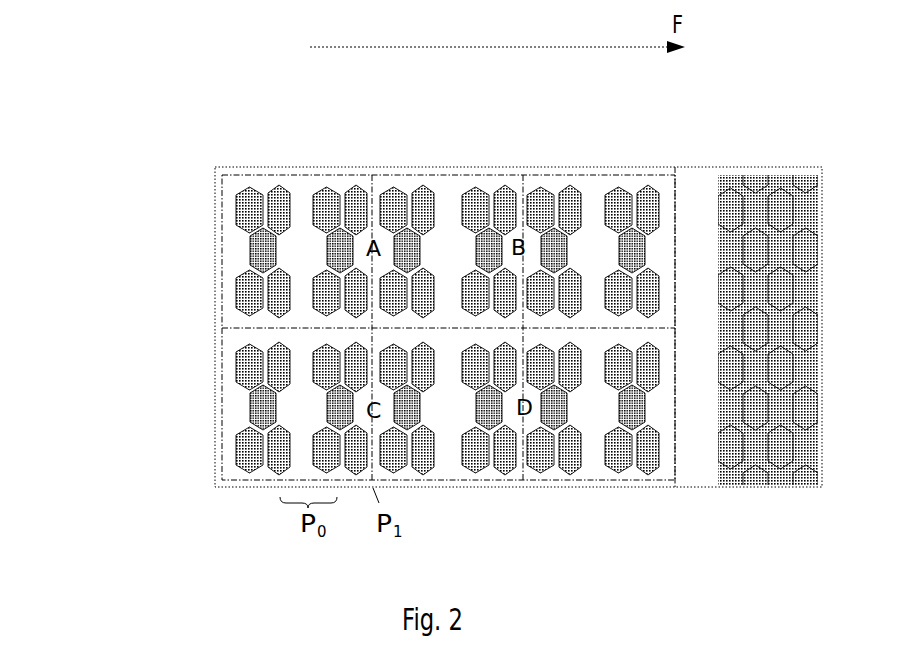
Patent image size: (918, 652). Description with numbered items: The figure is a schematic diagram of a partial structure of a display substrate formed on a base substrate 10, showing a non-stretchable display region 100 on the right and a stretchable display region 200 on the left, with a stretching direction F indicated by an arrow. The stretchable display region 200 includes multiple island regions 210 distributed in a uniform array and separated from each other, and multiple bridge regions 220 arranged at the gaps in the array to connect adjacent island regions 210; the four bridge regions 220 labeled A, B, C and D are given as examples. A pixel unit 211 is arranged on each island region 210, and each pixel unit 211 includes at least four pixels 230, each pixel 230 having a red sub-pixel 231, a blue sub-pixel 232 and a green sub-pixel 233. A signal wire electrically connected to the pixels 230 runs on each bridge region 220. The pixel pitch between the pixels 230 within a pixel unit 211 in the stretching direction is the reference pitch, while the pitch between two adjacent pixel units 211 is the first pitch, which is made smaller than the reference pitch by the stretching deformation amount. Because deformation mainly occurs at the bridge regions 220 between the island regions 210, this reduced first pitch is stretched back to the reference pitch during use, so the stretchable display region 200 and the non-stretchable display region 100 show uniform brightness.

The base substrate 10 is at (706, 470).
The non-stretchable display region 100 is at (822, 131).
The stretchable display region 200 is at (675, 131).
The island region 210 is at (330, 378).
The bridge region 220 is at (382, 470).
The pixel unit 211 is at (216, 426).
The pixel 230 is at (171, 369).
The red sub-pixel 231 is at (279, 363).
The blue sub-pixel 232 is at (246, 365).
The green sub-pixel 233 is at (259, 397).